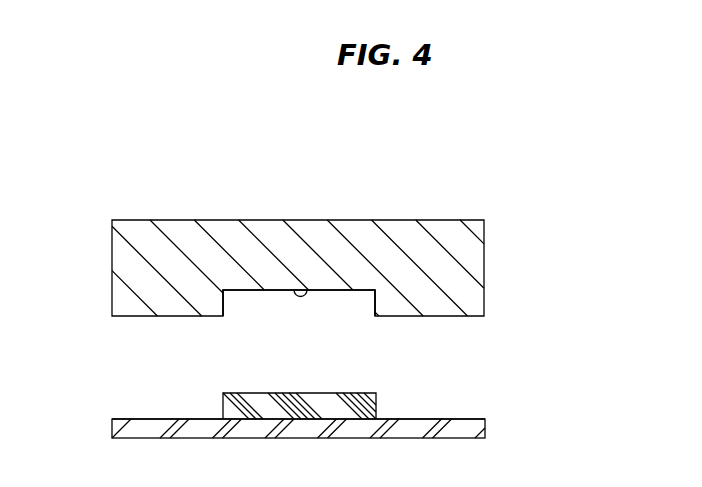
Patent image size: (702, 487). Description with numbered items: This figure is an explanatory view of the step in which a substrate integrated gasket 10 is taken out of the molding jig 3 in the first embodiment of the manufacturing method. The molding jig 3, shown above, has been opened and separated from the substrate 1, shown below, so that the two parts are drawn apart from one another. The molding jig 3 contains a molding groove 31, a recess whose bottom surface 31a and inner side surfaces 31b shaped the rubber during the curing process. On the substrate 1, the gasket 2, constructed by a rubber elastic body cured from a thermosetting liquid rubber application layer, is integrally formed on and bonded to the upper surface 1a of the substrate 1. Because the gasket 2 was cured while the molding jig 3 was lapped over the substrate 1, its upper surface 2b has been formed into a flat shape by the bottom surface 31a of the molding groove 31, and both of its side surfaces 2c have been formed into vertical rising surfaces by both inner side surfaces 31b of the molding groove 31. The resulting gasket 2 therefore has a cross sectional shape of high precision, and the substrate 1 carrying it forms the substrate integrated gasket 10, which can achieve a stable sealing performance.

The substrate 1 is at (487, 428).
The upper surface of the substrate 1a is at (438, 418).
The gasket 2 is at (329, 388).
The upper surface of the gasket 2b is at (293, 391).
The side surfaces of the gasket 2c is at (223, 408).
The molding jig 3 is at (420, 222).
The substrate integrated gasket 10 is at (134, 394).
The molding groove 31 is at (272, 306).
The bottom surface of the molding groove 31a is at (302, 295).
The inner side surfaces of the molding groove 31b is at (229, 305).